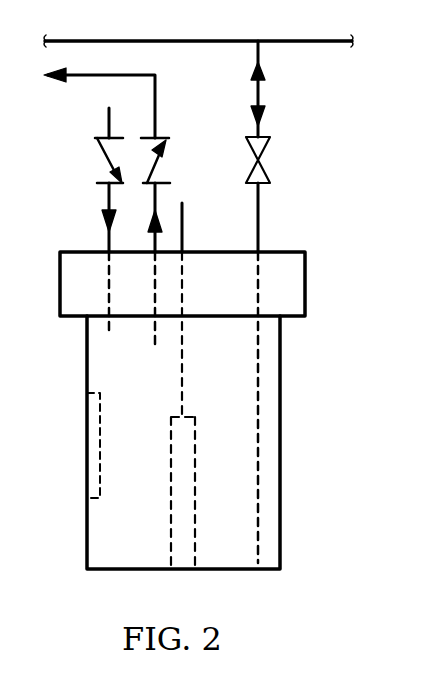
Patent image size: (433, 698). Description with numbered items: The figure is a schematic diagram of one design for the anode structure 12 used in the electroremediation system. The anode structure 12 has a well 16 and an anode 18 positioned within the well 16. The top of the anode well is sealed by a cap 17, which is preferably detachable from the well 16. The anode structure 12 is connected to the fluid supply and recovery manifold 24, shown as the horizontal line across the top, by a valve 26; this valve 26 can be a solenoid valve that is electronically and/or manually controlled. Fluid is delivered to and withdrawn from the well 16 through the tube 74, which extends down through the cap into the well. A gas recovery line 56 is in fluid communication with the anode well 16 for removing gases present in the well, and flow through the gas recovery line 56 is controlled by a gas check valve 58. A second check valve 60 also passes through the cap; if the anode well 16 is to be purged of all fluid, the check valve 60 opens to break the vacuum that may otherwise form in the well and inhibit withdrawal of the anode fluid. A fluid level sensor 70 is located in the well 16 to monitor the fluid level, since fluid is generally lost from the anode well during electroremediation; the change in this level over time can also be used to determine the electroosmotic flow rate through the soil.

The anode structure 12 is at (365, 238).
The well 16 is at (283, 388).
The container cap 17 is at (75, 252).
The anode 18 is at (196, 507).
The fluid supply and recovery manifold 24 is at (184, 42).
The valve 26 is at (262, 160).
The gas recovery line 56 is at (88, 82).
The gas check valve 58 is at (161, 165).
The check valve 60 is at (103, 158).
The fluid level sensor 70 is at (97, 433).
The tube 74 is at (262, 530).